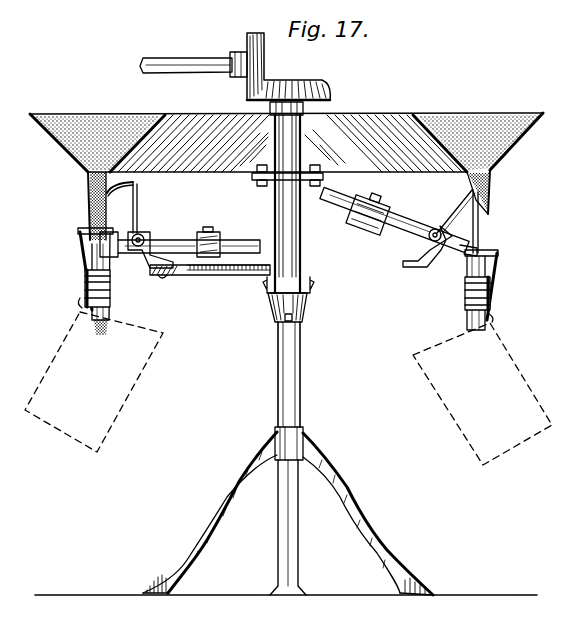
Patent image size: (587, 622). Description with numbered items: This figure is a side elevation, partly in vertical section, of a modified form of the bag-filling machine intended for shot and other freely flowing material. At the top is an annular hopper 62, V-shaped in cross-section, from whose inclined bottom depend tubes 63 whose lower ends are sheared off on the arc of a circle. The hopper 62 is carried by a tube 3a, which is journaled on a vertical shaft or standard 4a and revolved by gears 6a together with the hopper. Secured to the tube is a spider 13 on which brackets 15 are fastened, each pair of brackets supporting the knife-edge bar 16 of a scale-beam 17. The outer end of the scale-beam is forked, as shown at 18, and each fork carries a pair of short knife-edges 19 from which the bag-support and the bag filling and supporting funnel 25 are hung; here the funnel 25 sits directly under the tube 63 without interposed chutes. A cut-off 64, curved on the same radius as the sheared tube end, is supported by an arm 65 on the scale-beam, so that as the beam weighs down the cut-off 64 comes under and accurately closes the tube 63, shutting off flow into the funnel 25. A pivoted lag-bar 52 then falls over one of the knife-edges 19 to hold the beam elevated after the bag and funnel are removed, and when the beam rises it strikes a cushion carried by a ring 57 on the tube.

The tube 3a is at (302, 233).
The vertical shaft or standard 4a is at (300, 349).
The gears 6a is at (266, 85).
The spider 13 is at (213, 277).
The brackets 15 is at (143, 257).
The knife-edge bar 16 is at (433, 228).
The scale-beam 17 is at (158, 245).
The forked end of scale-beam 18 is at (15, 222).
The knife-edges 19 is at (90, 254).
The bag filling and supporting funnel 25 is at (80, 240).
The lag-bar 52 is at (480, 229).
The ring 57 is at (220, 237).
The annular hopper 62 is at (422, 122).
The tubes 63 is at (88, 189).
The cut-off 64 is at (110, 195).
The arm 65 is at (139, 218).